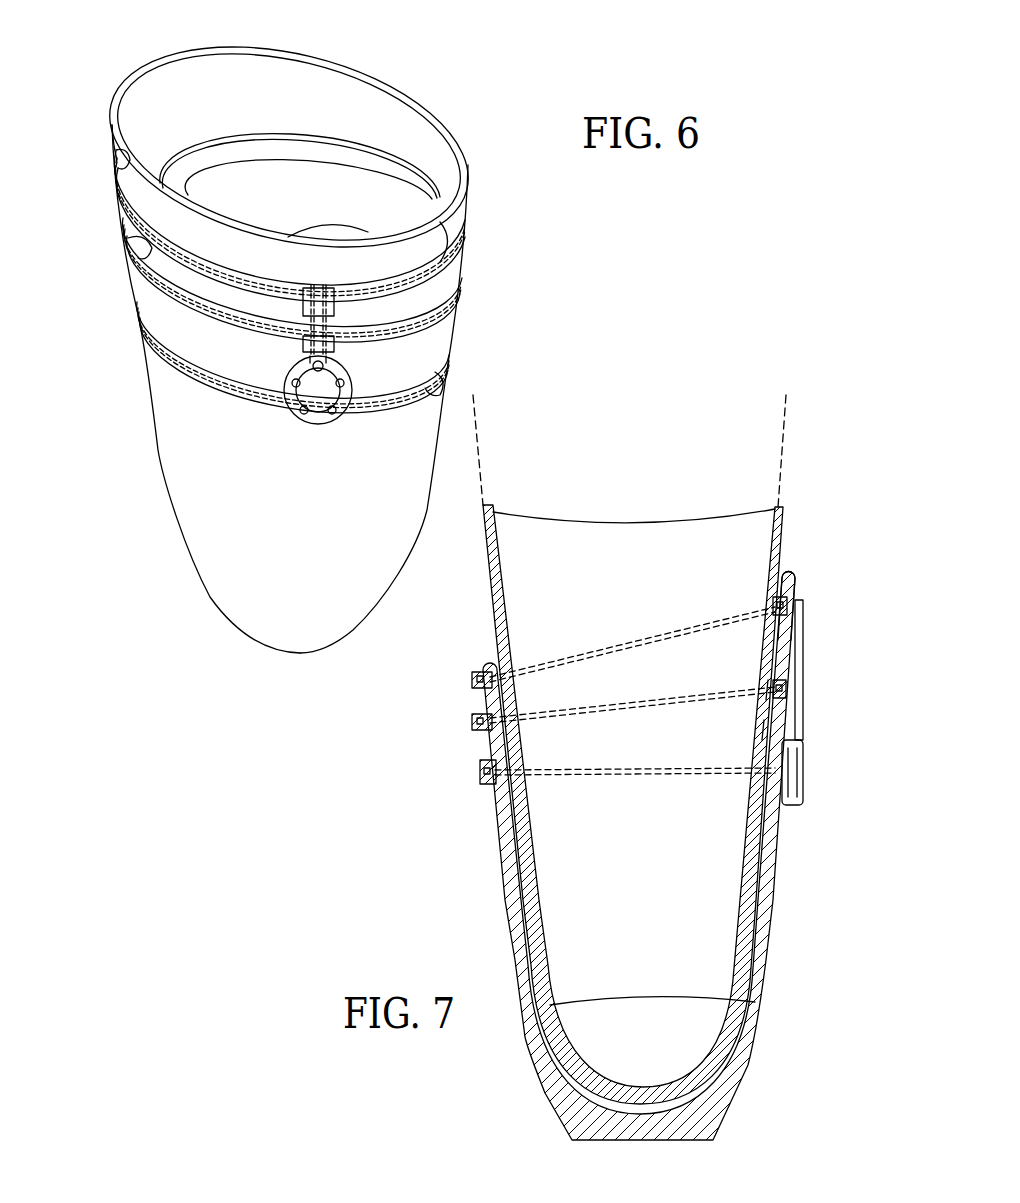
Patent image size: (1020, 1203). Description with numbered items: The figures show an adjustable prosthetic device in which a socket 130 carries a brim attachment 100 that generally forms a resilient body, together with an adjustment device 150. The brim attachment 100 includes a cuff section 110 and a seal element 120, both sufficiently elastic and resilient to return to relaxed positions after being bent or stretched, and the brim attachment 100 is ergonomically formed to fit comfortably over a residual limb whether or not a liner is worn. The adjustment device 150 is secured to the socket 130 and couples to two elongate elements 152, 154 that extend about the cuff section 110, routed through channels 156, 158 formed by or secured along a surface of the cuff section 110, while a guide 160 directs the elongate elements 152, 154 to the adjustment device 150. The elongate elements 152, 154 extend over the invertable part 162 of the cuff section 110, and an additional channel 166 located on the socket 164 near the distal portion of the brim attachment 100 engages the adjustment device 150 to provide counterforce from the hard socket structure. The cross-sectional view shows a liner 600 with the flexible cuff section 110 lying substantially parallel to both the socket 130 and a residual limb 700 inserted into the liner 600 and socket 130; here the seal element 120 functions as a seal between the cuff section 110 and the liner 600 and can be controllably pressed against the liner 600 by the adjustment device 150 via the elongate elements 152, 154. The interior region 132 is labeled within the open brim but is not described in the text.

In FIG. 6, the brim attachment 100 is at (148, 58).
In FIG. 7, the brim attachment 100 is at (435, 717).
In FIG. 6, the cuff section 110 is at (397, 85).
In FIG. 7, the cuff section 110 is at (790, 580).
In FIG. 6, the seal element 120 is at (425, 165).
In FIG. 7, the seal element 120 is at (785, 702).
In FIG. 7, the socket 130 is at (752, 1000).
In FIG. 6, the interior cavity 132 is at (336, 199).
In FIG. 6, the adjustment device 150 is at (295, 415).
In FIG. 7, the adjustment device 150 is at (805, 770).
In FIG. 6, the elongate element 152 is at (140, 243).
In FIG. 7, the elongate element 152 is at (790, 688).
In FIG. 6, the elongate element 154 is at (140, 212).
In FIG. 7, the elongate element 154 is at (790, 605).
In FIG. 6, the channel 156 is at (150, 275).
In FIG. 7, the channel 156 is at (480, 725).
In FIG. 6, the channel 158 is at (120, 163).
In FIG. 7, the channel 158 is at (475, 680).
In FIG. 6, the guide 160 is at (440, 225).
In FIG. 7, the guide 160 is at (800, 725).
In FIG. 6, the invertable part 162 is at (111, 140).
In FIG. 6, the socket 164 is at (437, 333).
In FIG. 7, the socket 164 is at (560, 775).
In FIG. 6, the additional channel 166 is at (430, 385).
In FIG. 7, the additional channel 166 is at (488, 775).
In FIG. 7, the liner 600 is at (755, 520).
In FIG. 7, the residual limb 700 is at (655, 476).